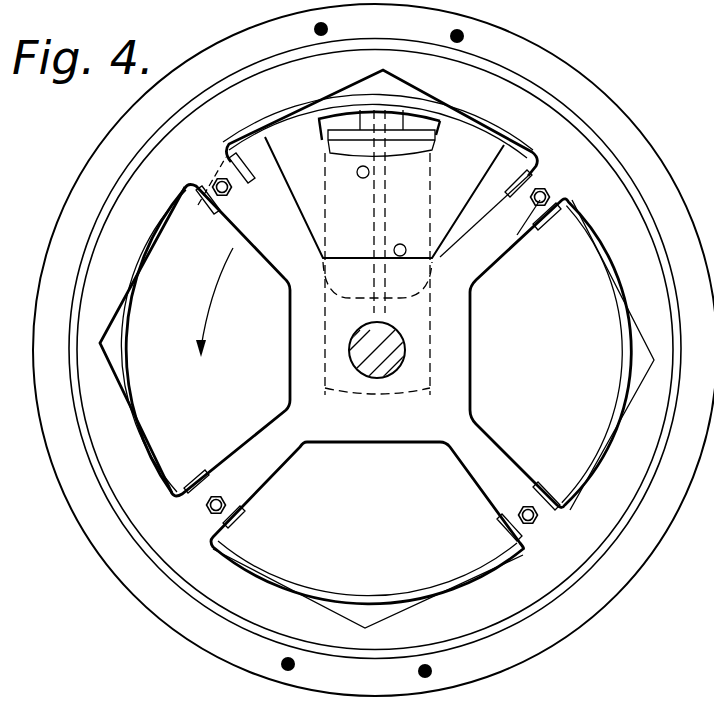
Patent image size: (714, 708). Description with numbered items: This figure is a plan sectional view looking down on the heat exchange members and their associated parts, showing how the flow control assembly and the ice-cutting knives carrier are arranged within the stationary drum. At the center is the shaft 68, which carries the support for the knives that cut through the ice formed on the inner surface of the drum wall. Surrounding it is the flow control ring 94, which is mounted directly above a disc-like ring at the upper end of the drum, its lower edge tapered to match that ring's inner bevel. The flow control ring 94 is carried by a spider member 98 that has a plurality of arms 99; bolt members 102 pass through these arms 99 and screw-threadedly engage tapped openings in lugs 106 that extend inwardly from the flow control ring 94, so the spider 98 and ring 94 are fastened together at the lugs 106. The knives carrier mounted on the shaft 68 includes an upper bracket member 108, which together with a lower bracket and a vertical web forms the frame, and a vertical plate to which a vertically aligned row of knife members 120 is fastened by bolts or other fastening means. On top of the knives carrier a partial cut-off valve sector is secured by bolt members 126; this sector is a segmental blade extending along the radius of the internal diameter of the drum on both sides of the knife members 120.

The shaft 68 is at (372, 372).
The flow control ring 94 is at (620, 348).
The spider member 98 is at (450, 357).
The arms 99 is at (490, 453).
The bolt members 102 is at (163, 245).
The lugs 106 is at (212, 218).
The upper bracket member 108 is at (322, 330).
The knife members 120 is at (390, 118).
The bolt members 126 is at (394, 250).